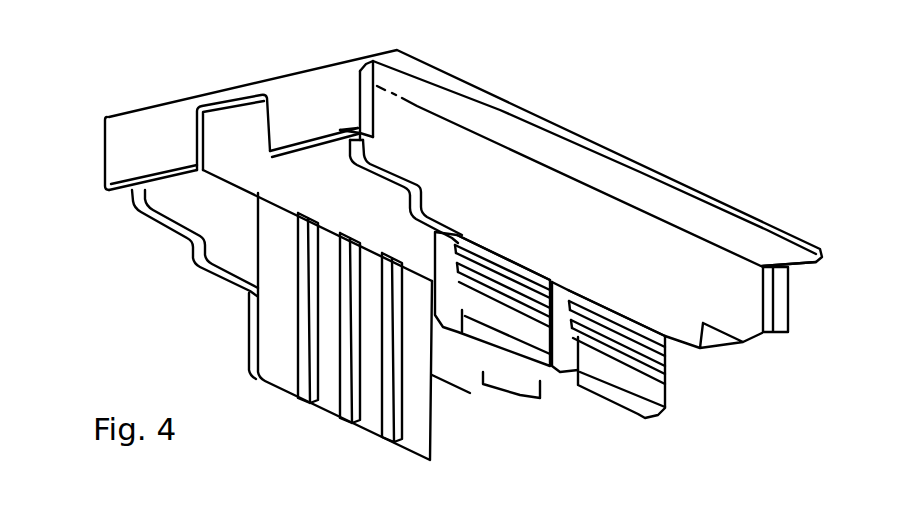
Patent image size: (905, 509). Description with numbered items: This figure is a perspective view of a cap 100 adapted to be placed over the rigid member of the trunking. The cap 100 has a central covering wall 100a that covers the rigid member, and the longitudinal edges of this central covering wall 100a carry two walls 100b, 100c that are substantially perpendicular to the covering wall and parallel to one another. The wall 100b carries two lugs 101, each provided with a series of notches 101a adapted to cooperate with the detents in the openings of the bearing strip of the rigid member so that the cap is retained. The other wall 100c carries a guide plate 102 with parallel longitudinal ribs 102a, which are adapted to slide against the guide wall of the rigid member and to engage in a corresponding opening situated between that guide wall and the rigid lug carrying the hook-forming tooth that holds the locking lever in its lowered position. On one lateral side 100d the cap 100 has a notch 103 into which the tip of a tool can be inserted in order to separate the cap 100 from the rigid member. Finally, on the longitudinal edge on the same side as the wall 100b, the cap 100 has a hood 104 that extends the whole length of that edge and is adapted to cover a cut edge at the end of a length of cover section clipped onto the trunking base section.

The cap 100 is at (652, 157).
The central covering wall 100a is at (273, 173).
The wall 100b is at (718, 268).
The wall 100c is at (218, 245).
The lateral side 100d is at (316, 86).
The lug 101 is at (601, 388).
The notches 101a is at (530, 290).
The guide plate 102 is at (283, 386).
The longitudinal ribs 102a is at (397, 427).
The notch 103 is at (241, 117).
The hood 104 is at (522, 130).